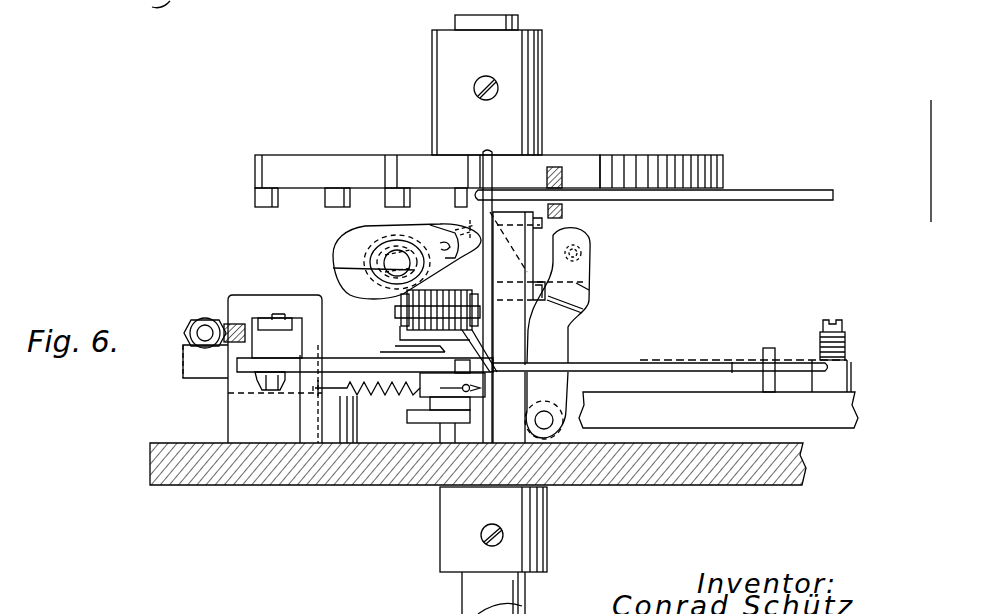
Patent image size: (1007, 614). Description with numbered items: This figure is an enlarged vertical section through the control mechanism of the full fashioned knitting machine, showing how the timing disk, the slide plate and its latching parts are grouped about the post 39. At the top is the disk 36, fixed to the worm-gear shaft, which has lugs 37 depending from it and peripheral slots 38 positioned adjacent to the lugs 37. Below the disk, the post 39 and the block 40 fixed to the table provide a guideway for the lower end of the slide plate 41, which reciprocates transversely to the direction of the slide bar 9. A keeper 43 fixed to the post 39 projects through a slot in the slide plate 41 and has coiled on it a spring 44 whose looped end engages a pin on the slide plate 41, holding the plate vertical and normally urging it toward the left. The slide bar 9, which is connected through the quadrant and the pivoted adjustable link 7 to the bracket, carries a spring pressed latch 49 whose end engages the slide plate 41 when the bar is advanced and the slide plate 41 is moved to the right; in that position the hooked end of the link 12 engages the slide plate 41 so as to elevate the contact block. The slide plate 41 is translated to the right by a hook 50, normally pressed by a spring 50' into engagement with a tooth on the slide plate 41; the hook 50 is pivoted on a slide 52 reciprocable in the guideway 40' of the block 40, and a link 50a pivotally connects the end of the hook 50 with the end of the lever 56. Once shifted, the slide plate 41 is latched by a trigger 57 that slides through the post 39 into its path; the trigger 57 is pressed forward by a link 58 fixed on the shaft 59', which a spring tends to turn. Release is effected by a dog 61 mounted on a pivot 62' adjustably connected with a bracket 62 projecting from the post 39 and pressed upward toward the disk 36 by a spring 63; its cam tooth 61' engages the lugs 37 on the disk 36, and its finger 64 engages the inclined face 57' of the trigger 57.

The pivoted adjustable link 7 is at (215, 345).
The slide bar 9 is at (828, 420).
The link 12 is at (802, 193).
The disk 36 is at (622, 165).
The cams or lugs 37 is at (268, 207).
The peripheral slots or recesses 38 is at (263, 153).
The post 39 is at (517, 430).
The block 40 is at (410, 478).
The guideway 40' is at (425, 501).
The slide plate 41 is at (392, 352).
The keeper 43 is at (422, 338).
The spring 44 is at (425, 312).
The spring pressed latch 49 is at (672, 365).
The hook 50 is at (445, 441).
The spring 50' is at (358, 450).
The link 50a is at (375, 445).
The slide 52 is at (465, 445).
The lever 56 is at (306, 360).
The trigger 57 is at (572, 322).
The inclined face 57' is at (582, 324).
The link 58 is at (606, 289).
The shaft 59' is at (582, 468).
The dog 61 is at (435, 230).
The cam tooth 61' is at (452, 213).
The bracket 62 is at (383, 261).
The pivot 62' is at (362, 273).
The spring 63 is at (439, 302).
The finger 64 is at (500, 305).